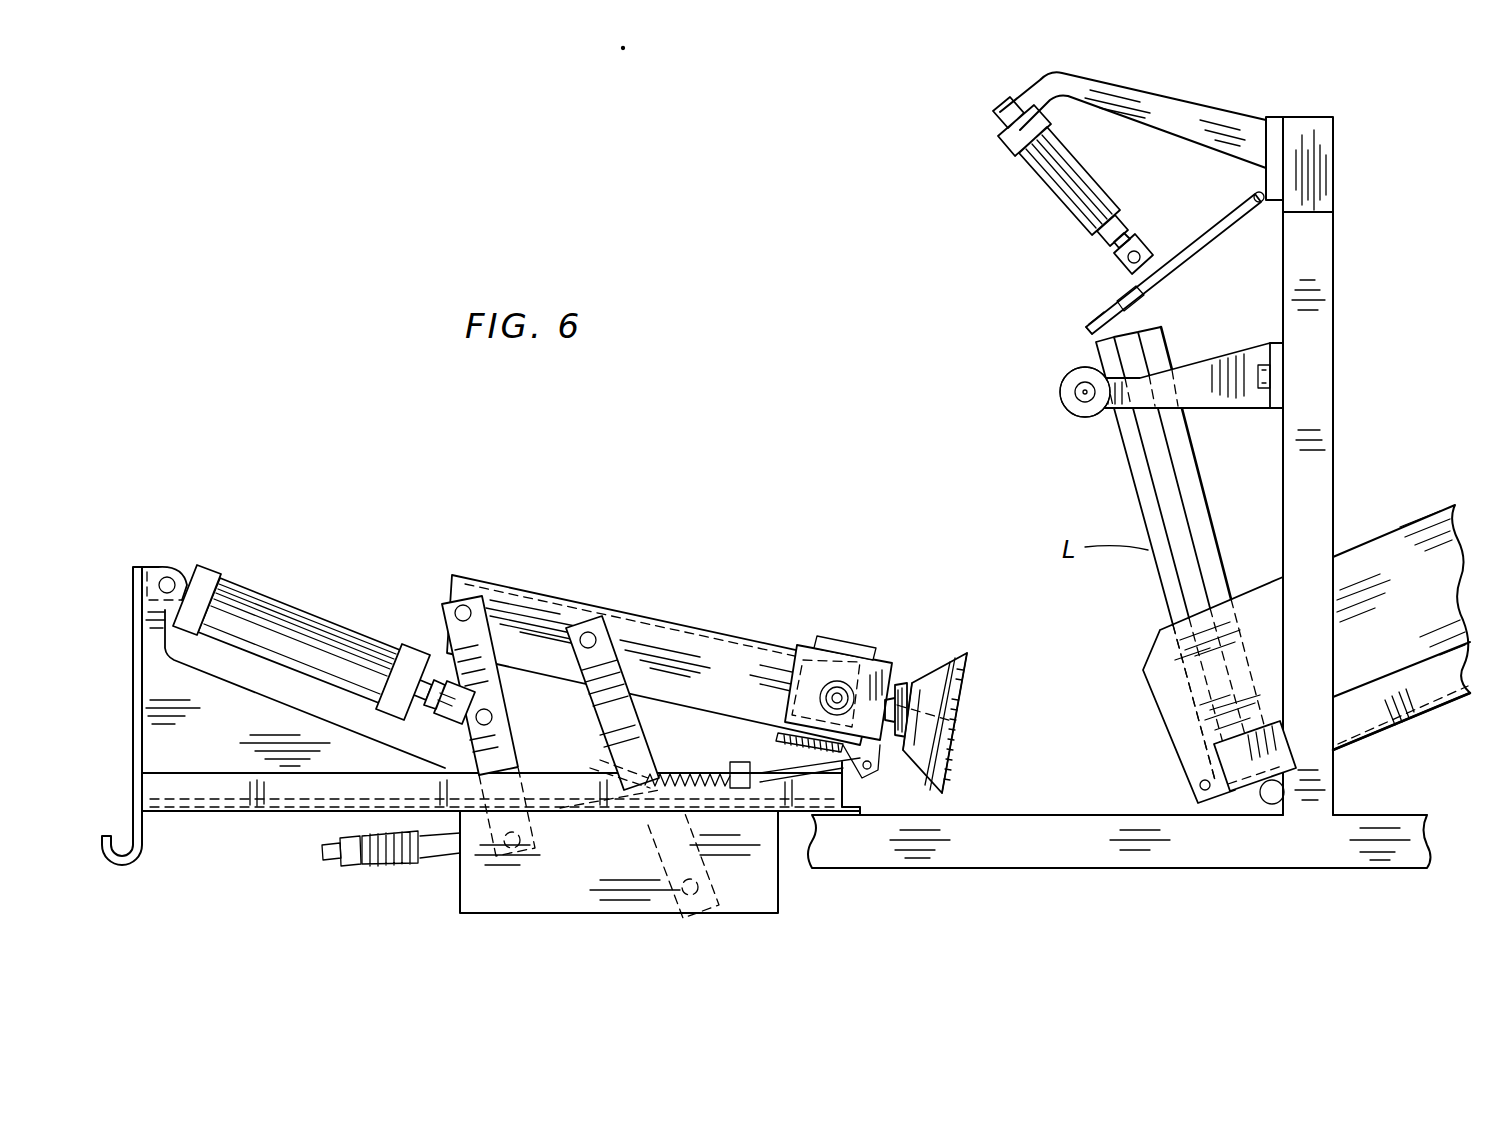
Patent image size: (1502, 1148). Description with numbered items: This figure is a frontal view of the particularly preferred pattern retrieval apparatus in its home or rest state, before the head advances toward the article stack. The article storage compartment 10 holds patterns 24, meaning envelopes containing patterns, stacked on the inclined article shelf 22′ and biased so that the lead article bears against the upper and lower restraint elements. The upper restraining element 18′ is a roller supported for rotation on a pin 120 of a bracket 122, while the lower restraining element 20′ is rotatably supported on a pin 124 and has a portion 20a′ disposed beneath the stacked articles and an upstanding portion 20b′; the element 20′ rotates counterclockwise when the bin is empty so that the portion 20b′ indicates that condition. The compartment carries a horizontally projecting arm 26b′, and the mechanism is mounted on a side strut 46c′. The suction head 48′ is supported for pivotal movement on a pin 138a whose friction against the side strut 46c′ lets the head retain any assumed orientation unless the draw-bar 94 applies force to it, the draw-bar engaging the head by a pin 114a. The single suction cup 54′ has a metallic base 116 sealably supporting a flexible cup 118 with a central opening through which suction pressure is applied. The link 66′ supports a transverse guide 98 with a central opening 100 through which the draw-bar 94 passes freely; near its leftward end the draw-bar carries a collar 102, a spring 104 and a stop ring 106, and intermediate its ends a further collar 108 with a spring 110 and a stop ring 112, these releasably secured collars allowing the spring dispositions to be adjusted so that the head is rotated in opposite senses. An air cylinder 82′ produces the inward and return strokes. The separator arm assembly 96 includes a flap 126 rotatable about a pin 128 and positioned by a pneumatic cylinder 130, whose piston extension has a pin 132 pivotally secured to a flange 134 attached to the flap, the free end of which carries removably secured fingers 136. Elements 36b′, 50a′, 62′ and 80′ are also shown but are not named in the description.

The article storage compartment 10 is at (1425, 362).
The upper restraining element 18′ is at (1062, 410).
The lower restraining element 20′ is at (1190, 769).
The portion 20a′ is at (1228, 810).
The upstanding portion 20b′ is at (1190, 762).
The inclined article shelf 22′ is at (1383, 550).
The patterns 24 is at (1193, 490).
The horizontally projecting arm 26b′ is at (1050, 860).
The frame foot 36b′ is at (826, 800).
The side strut 46c′ is at (680, 635).
The suction head 48′ is at (812, 645).
The clamp strip 50a′ is at (856, 647).
The suction cup 54′ is at (968, 677).
The link 62′ is at (448, 640).
The link 66′ is at (603, 712).
The piston rod clevis 80′ is at (450, 727).
The air cylinder 82′ is at (318, 622).
The draw-bar 94 is at (619, 862).
The separator arm assembly 96 is at (1170, 196).
The transverse guide 98 is at (642, 812).
The central opening 100 is at (618, 773).
The collar 102 is at (340, 848).
The spring 104 is at (366, 862).
The stop ring 106 is at (422, 860).
The further collar 108 is at (742, 772).
The spring 110 is at (690, 778).
The stop ring 112 is at (660, 835).
The pin 114a is at (866, 772).
The metallic base 116 is at (926, 680).
The flexible cup 118 is at (946, 728).
The pin 120 is at (1083, 385).
The bracket 122 is at (1225, 365).
The pin 124 is at (1198, 785).
The flap 126 is at (1215, 222).
The pin 128 is at (1261, 206).
The pneumatic cylinder 130 is at (1048, 178).
The pin 132 is at (1140, 260).
The flange 134 is at (1125, 290).
The fingers 136 is at (1086, 327).
The pin 138a is at (828, 688).